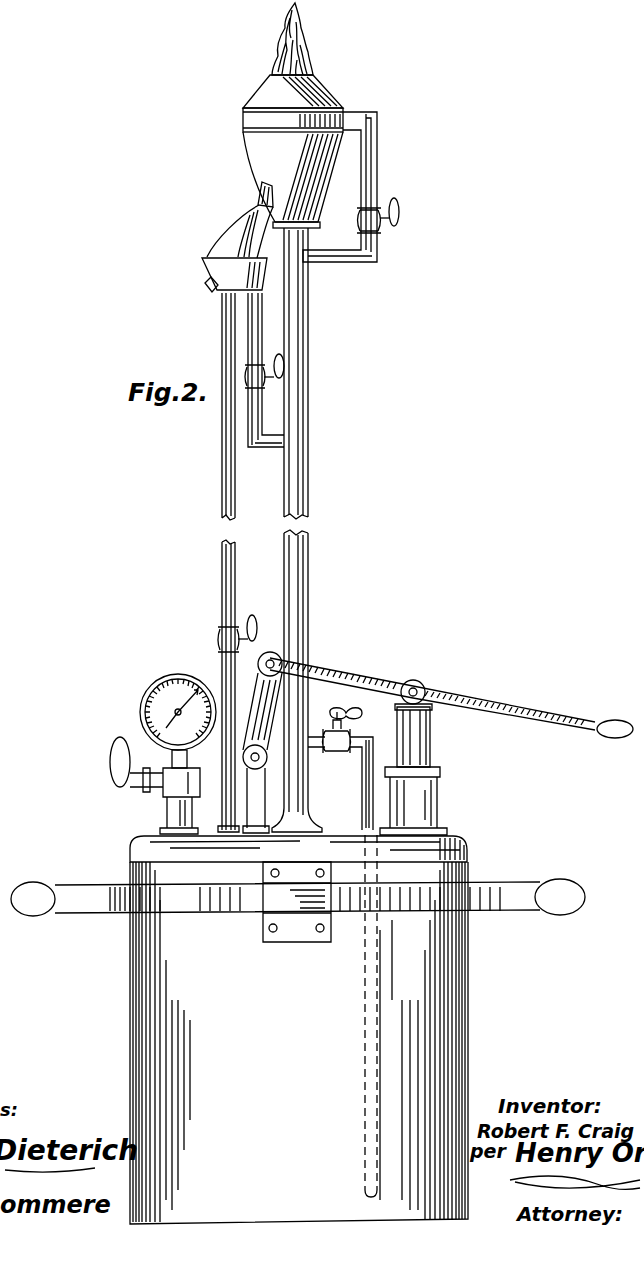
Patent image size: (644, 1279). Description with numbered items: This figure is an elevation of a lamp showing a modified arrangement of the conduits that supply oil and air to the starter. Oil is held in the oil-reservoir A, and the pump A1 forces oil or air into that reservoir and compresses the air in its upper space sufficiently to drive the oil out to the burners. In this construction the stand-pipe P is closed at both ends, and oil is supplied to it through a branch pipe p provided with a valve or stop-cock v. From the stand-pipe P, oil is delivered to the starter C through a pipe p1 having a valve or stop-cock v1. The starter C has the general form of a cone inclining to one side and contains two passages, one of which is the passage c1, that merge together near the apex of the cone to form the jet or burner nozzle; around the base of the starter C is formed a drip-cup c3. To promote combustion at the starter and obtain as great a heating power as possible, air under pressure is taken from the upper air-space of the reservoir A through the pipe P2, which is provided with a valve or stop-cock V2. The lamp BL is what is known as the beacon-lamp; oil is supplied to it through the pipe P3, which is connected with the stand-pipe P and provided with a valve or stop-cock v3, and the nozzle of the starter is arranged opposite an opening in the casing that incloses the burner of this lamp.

The beacon-lamp BL is at (282, 138).
The pipe P3 is at (370, 167).
The valve or stop-cock v3 is at (380, 229).
The passage c1 is at (261, 203).
The starter C is at (232, 246).
The drip-cup c3 is at (234, 275).
The pipe p1 is at (252, 322).
The valve or stop-cock v1 is at (246, 378).
The pipe P2 is at (222, 425).
The stand-pipe P is at (307, 533).
The valve or stop-cock V2 is at (220, 638).
The valve or stop-cock v is at (350, 734).
The branch pipe p is at (364, 793).
The pump A1 is at (438, 743).
The oil-reservoir A is at (298, 1029).